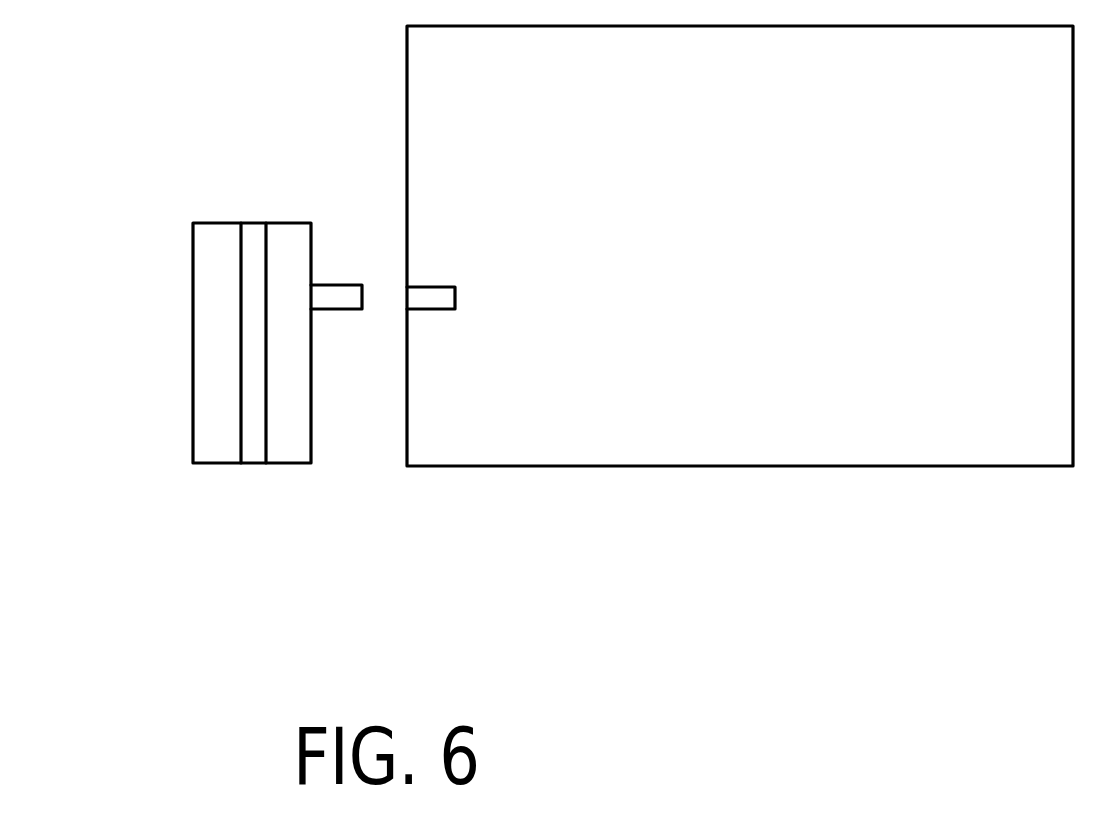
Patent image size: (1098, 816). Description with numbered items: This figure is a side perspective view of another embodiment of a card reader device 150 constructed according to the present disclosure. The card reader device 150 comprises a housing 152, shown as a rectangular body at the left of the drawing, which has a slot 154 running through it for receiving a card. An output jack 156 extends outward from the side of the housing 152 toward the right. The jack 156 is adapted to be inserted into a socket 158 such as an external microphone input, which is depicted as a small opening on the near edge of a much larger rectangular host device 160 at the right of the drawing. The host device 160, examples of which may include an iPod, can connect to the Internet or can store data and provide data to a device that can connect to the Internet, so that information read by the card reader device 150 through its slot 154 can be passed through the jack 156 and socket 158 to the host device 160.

The card reader device 150 is at (192, 522).
The housing 152 is at (207, 340).
The slot 154 is at (252, 264).
The output jack 156 is at (339, 293).
The socket 158 is at (430, 297).
The host device 160 is at (602, 466).